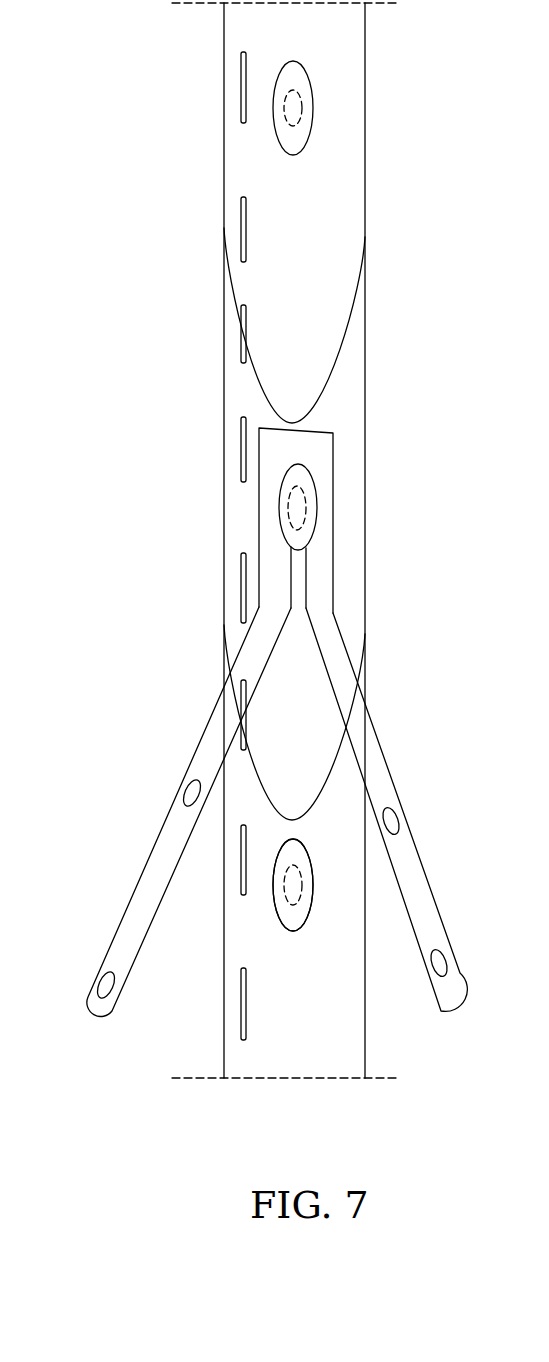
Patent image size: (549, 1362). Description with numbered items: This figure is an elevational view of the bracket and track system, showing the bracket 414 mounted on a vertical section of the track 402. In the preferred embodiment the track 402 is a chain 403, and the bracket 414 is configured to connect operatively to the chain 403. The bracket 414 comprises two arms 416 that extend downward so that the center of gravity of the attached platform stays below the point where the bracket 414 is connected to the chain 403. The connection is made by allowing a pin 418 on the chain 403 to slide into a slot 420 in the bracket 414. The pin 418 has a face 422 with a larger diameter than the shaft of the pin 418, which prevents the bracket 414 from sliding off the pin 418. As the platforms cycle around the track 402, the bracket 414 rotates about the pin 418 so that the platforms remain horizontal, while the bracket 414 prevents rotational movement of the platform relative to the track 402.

The track 402 is at (308, 540).
The chain 403 is at (243, 260).
The bracket 414 is at (257, 722).
The arms 416 is at (203, 764).
The pin 418 is at (292, 510).
The slot 420 is at (298, 568).
The face 422 is at (294, 931).